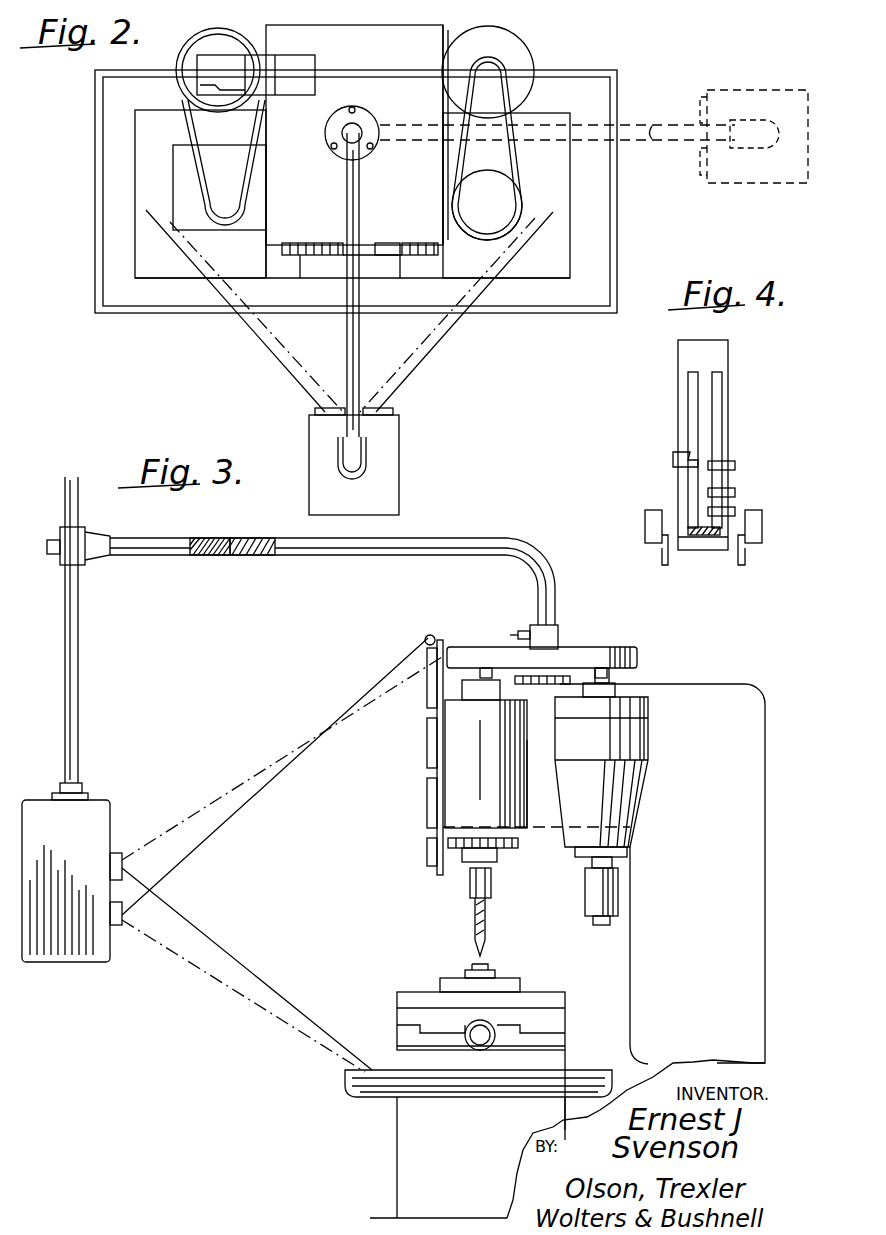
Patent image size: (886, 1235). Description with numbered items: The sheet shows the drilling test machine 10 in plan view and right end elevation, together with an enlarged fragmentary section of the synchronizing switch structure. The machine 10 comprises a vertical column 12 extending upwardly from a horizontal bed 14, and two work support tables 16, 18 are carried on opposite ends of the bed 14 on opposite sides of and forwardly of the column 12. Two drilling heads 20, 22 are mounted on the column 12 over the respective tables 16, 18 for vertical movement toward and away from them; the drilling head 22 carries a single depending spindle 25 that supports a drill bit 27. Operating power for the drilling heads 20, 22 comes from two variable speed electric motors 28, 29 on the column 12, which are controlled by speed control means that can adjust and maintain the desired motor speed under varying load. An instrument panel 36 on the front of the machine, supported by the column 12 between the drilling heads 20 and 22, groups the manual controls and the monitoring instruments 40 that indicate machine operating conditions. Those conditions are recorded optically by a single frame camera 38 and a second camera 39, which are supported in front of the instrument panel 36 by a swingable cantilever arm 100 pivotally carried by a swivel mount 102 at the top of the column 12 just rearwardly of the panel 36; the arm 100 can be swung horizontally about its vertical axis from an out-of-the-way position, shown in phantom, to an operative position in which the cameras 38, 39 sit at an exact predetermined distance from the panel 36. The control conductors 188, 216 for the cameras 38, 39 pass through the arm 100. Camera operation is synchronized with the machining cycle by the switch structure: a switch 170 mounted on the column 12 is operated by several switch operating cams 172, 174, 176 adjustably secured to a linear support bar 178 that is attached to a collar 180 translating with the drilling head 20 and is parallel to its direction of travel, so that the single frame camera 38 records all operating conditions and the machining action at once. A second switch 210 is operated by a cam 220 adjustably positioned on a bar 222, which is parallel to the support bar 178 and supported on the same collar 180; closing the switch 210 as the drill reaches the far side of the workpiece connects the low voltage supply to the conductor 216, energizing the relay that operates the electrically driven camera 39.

In FIG. 2, the machine 10 is at (538, 330).
In FIG. 3, the machine 10 is at (585, 638).
In FIG. 2, the vertical column 12 is at (270, 230).
In FIG. 3, the vertical column 12 is at (744, 936).
In FIG. 2, the horizontal bed 14 is at (116, 297).
In FIG. 3, the horizontal bed 14 is at (425, 1155).
In FIG. 2, the work support table 16 is at (150, 262).
In FIG. 2, the work support table 18 is at (556, 264).
In FIG. 3, the work support table 18 is at (412, 1015).
In FIG. 2, the drilling head 20 is at (168, 192).
In FIG. 2, the drilling head 22 is at (543, 218).
In FIG. 3, the drilling head 22 is at (532, 810).
In FIG. 3, the spindle 25 is at (470, 884).
In FIG. 3, the drill bit 27 is at (474, 928).
In FIG. 2, the variable speed electric motor 28 is at (212, 32).
In FIG. 2, the variable speed electric motor 29 is at (518, 52).
In FIG. 3, the variable speed electric motor 29 is at (628, 746).
In FIG. 2, the instrument panel 36 is at (408, 262).
In FIG. 3, the instrument panel 36 is at (425, 797).
In FIG. 2, the single frame camera 38 is at (312, 428).
In FIG. 3, the single frame camera 38 is at (120, 852).
In FIG. 2, the camera 39 is at (388, 445).
In FIG. 3, the camera 39 is at (118, 930).
In FIG. 2, the monitoring instruments 40 is at (330, 258).
In FIG. 3, the monitoring instruments 40 is at (425, 740).
In FIG. 2, the swingable cantilever arm 100 is at (362, 387).
In FIG. 3, the swingable cantilever arm 100 is at (172, 536).
In FIG. 2, the swivel mount 102 is at (366, 128).
In FIG. 3, the swivel mount 102 is at (556, 630).
In FIG. 4, the switch 170 is at (752, 527).
In FIG. 4, the switch operating cam 172 is at (738, 510).
In FIG. 4, the switch operating cam 174 is at (738, 490).
In FIG. 4, the switch operating cam 176 is at (738, 463).
In FIG. 4, the linear support bar 178 is at (720, 400).
In FIG. 4, the collar 180 is at (705, 530).
In FIG. 3, the control wire 188 is at (210, 556).
In FIG. 4, the switch 210 is at (648, 522).
In FIG. 3, the conductor 216 is at (258, 556).
In FIG. 4, the cam 220 is at (672, 456).
In FIG. 4, the bar 222 is at (690, 410).